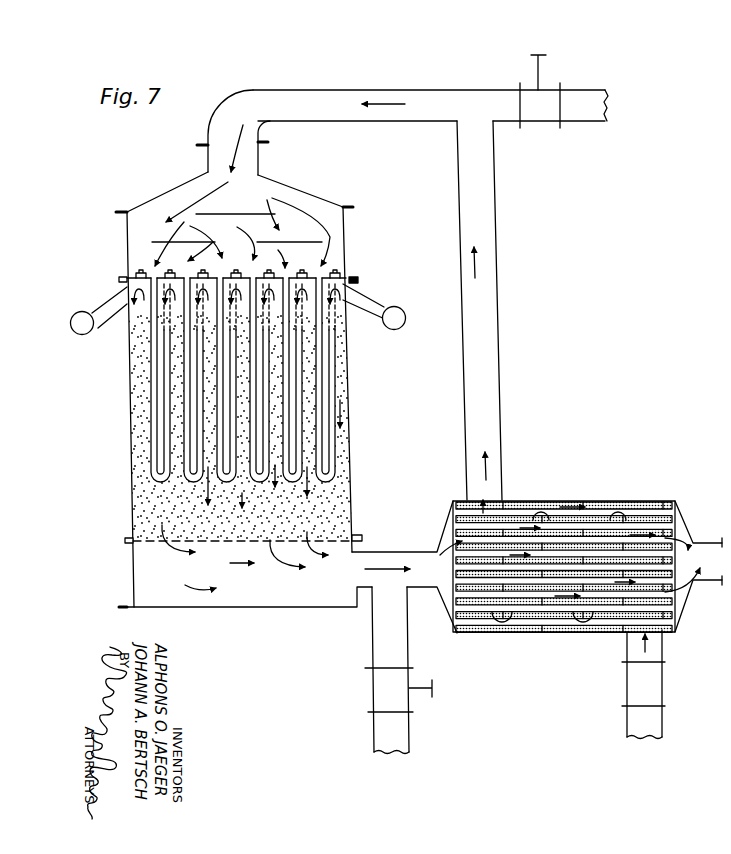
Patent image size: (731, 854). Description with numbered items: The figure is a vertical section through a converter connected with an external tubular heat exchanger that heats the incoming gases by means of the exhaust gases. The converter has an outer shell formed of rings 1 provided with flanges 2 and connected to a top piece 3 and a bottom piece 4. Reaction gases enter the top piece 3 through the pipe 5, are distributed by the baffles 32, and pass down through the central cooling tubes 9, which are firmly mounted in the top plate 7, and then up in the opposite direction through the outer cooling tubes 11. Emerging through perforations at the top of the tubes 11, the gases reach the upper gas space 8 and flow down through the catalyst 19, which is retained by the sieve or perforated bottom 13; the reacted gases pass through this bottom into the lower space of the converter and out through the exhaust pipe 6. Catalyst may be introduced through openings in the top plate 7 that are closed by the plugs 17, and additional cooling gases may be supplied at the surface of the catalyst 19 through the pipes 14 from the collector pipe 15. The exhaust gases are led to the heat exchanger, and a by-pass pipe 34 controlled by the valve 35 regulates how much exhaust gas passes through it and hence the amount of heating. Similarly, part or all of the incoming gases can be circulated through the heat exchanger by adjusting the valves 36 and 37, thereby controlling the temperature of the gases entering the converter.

The rings 1 is at (125, 236).
The flanges 2 is at (123, 278).
The top piece 3 is at (327, 197).
The bottom piece 4 is at (250, 607).
The pipe 5 is at (268, 148).
The exhaust pipe 6 is at (357, 565).
The top plate 7 is at (318, 270).
The upper gas space 8 is at (359, 283).
The central cooling tubes 9 is at (148, 410).
The outer cooling tubes 11 is at (147, 365).
The sieve or perforated bottom 13 is at (209, 541).
The pipes 14 is at (103, 303).
The collector pipe 15 is at (81, 335).
The plugs 17 is at (171, 274).
The catalyst 19 is at (140, 452).
The baffles 32 is at (226, 213).
The by-pass pipe 34 is at (409, 647).
The valve 35 is at (434, 687).
The valve 36 is at (662, 683).
The valve 37 is at (546, 61).